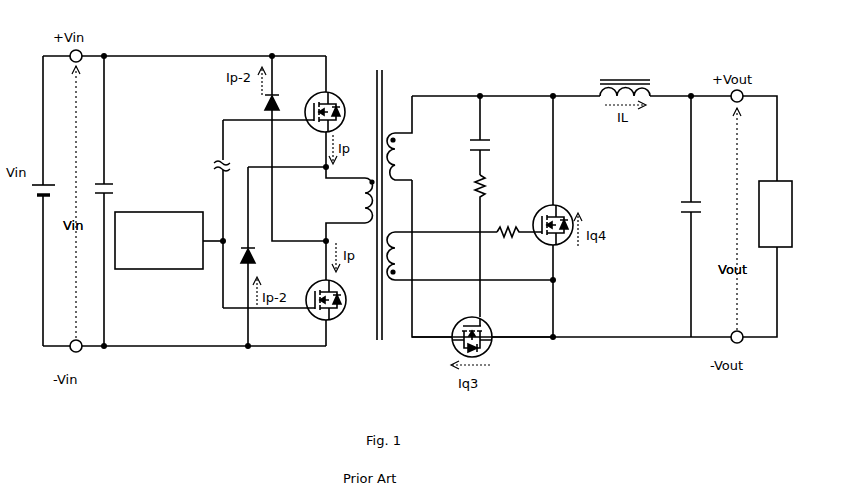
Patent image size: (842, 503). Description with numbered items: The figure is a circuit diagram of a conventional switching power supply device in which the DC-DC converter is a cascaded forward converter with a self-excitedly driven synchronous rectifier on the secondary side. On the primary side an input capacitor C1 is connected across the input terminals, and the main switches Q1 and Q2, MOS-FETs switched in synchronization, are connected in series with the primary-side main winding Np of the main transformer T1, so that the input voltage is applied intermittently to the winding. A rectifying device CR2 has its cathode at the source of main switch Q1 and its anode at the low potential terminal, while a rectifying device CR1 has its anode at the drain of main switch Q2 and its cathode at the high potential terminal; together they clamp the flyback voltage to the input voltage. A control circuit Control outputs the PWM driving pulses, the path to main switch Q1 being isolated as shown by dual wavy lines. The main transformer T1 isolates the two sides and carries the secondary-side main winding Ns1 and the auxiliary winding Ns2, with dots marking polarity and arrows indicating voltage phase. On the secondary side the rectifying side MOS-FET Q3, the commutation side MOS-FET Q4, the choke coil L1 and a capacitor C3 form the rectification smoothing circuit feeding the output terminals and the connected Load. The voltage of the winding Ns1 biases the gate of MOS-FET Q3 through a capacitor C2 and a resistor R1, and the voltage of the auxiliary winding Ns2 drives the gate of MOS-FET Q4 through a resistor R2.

The input capacitor C1 is at (112, 201).
The control circuit Control is at (169, 240).
The rectifying device CR1 is at (277, 148).
The rectifying device CR2 is at (283, 256).
The main switch Q1 is at (322, 111).
The main switch Q2 is at (322, 293).
The primary-side main winding Np is at (336, 190).
The main transformer T1 is at (377, 205).
The secondary-side main winding Ns1 is at (407, 142).
The auxiliary winding Ns2 is at (405, 240).
The capacitor C2 is at (487, 135).
The resistor R1 is at (490, 246).
The resistor R2 is at (516, 243).
The rectifying side MOS-FET Q3 is at (482, 337).
The commutation side MOS-FET Q4 is at (554, 216).
The choke coil L1 is at (612, 86).
The capacitor C3 is at (698, 216).
The load Load is at (775, 214).